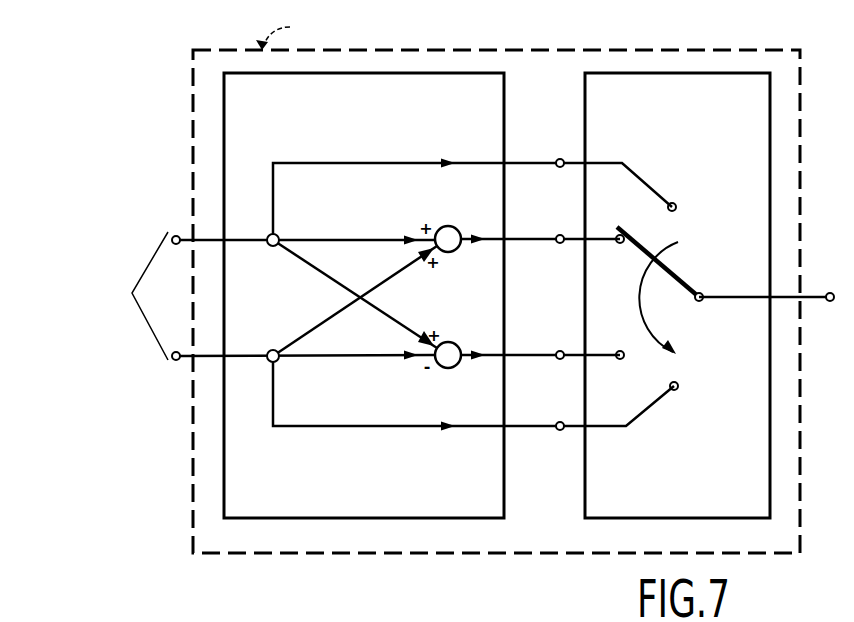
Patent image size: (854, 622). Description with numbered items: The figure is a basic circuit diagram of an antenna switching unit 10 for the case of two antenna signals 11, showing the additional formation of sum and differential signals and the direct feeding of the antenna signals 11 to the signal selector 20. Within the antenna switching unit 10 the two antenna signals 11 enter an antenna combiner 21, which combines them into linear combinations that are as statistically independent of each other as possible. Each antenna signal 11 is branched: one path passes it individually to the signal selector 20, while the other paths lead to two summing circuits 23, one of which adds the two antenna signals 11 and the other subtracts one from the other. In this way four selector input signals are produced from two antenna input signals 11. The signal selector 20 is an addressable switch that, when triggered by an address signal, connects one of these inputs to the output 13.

The antenna switching unit 10 is at (393, 556).
The antenna signals 11 is at (114, 296).
The output 13 is at (805, 299).
The signal selector 20 is at (584, 497).
The antenna combiner 21 is at (504, 498).
The summing circuit 23 is at (458, 228).